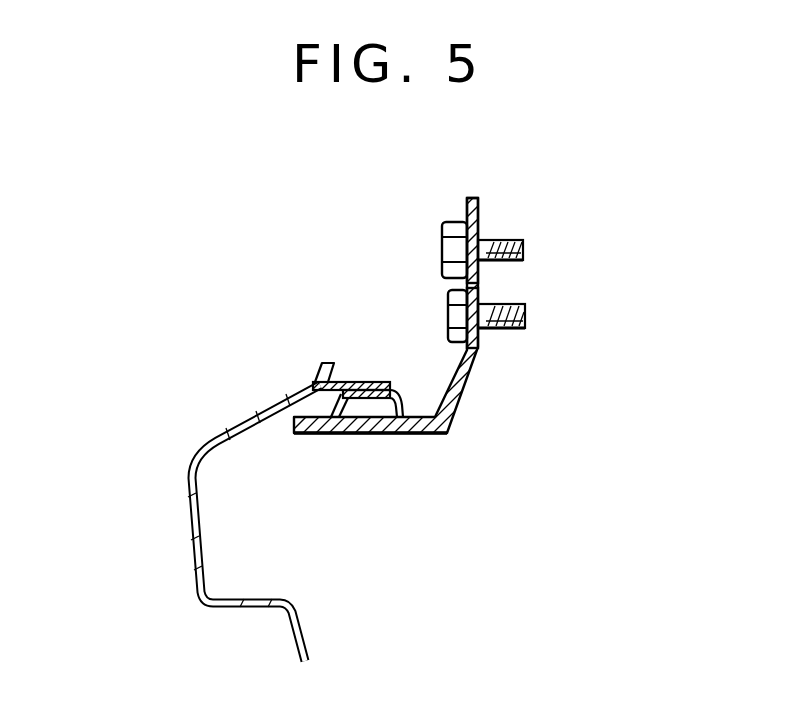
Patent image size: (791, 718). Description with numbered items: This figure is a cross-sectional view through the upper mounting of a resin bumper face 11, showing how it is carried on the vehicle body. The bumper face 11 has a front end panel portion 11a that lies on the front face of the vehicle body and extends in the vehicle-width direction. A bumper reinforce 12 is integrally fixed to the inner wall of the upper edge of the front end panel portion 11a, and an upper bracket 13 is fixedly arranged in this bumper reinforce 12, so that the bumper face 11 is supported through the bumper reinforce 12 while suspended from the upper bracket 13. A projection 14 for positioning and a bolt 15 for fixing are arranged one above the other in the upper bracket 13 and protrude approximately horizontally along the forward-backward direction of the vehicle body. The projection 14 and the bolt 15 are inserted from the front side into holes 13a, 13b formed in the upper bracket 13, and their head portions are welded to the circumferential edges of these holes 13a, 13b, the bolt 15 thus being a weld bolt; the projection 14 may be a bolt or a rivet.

The bumper face 11 is at (174, 507).
The front end panel portion 11a is at (357, 382).
The bumper reinforce 12 is at (368, 400).
The upper bracket 13 is at (453, 385).
The hole 13a is at (478, 326).
The hole 13b is at (481, 243).
The projection for positioning 14 is at (527, 312).
The bolt for fixing 15 is at (527, 246).